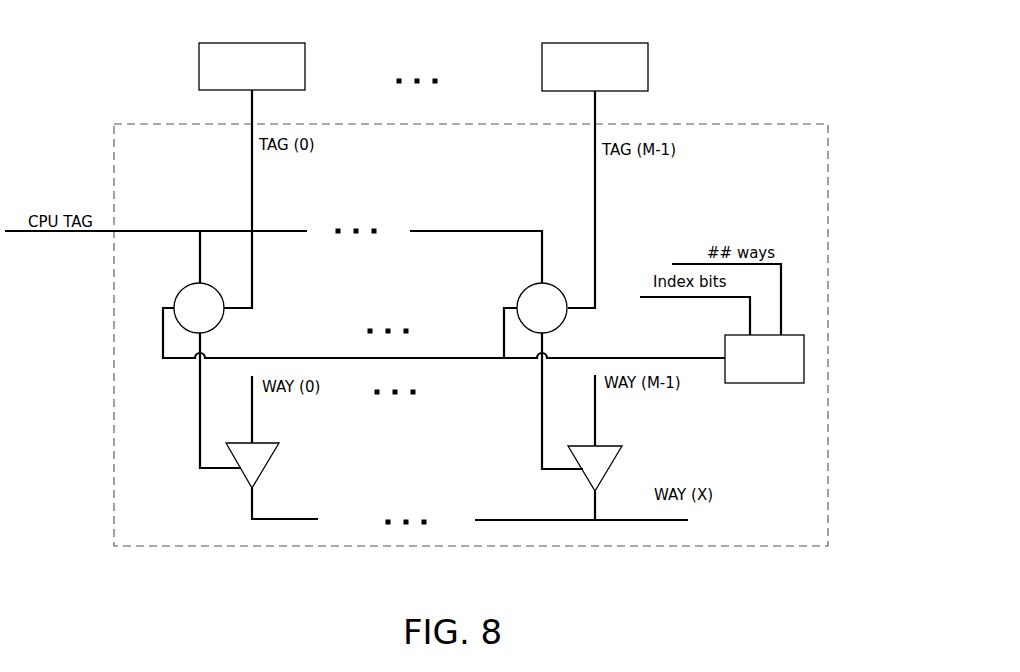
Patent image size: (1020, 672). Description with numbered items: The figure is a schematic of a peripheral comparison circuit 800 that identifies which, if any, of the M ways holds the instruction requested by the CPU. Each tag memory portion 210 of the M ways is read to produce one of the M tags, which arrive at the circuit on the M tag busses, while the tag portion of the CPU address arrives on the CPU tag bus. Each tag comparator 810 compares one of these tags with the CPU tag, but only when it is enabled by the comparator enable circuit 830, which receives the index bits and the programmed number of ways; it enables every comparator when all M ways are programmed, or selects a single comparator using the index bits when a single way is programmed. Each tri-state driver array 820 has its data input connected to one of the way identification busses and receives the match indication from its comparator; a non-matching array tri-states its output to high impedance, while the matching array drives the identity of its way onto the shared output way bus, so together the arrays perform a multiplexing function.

The tag memory portion 210 is at (245, 44).
The comparison circuit 800 is at (828, 175).
The tag comparator 810 is at (217, 323).
The tri-state driver array 820 is at (265, 468).
The comparator enable circuit 830 is at (804, 358).